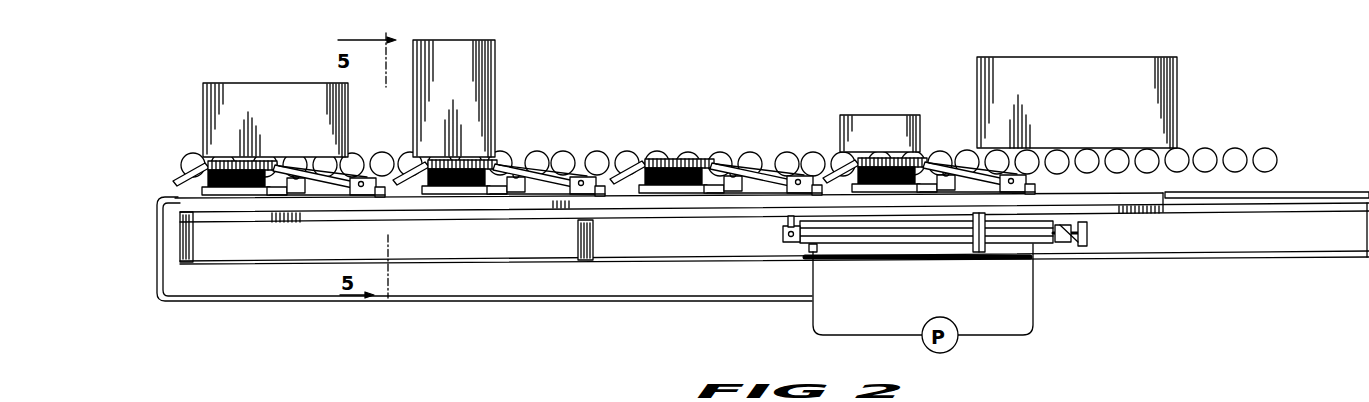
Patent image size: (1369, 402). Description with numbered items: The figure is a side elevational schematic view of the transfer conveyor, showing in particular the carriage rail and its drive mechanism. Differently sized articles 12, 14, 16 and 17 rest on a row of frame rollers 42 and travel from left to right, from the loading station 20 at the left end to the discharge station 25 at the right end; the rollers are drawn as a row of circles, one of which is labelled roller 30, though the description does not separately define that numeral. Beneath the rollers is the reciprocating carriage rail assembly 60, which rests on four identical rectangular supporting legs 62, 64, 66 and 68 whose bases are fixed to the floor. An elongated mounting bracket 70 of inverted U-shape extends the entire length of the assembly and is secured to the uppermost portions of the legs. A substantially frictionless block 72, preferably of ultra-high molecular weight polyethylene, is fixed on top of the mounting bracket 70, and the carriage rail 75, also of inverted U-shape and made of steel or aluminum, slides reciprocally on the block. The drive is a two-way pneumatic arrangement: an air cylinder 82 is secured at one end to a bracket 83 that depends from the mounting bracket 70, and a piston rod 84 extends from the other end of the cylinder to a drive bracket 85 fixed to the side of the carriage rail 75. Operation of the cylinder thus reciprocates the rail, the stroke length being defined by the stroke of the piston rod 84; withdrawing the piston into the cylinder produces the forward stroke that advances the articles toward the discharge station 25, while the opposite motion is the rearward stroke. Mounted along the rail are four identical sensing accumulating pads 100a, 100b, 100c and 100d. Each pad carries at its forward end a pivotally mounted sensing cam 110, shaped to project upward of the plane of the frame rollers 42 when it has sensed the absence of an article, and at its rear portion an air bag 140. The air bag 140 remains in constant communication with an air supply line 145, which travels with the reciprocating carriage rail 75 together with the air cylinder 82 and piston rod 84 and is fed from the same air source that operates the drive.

The article 12 is at (881, 138).
The article 14 is at (459, 116).
The article 16 is at (275, 124).
The article 17 is at (1074, 108).
The loading station 20 is at (176, 89).
The discharge station 25 is at (1260, 130).
The balls 30 is at (1276, 150).
The frame rollers 42 is at (574, 154).
The reciprocating carriage rail assembly 60 is at (1164, 201).
The supporting leg 62 is at (191, 258).
The supporting leg 64 is at (590, 246).
The supporting leg 66 is at (978, 253).
The supporting leg 68 is at (1366, 257).
The mounting bracket 70 is at (1201, 212).
The frictionless block 72 is at (1290, 196).
The carriage rail 75 is at (535, 205).
The air cylinder 82 is at (885, 244).
The bracket 83 is at (1050, 246).
The piston rod 84 is at (795, 241).
The drive bracket 85 is at (786, 222).
The sensing accumulating pad 100a is at (330, 203).
The sensing accumulating pad 100b is at (500, 202).
The sensing accumulating pad 100c is at (703, 202).
The sensing accumulating pad 100d is at (944, 137).
The sensing cam 110 is at (323, 168).
The air bag 140 is at (228, 168).
The air supply line 145 is at (470, 299).